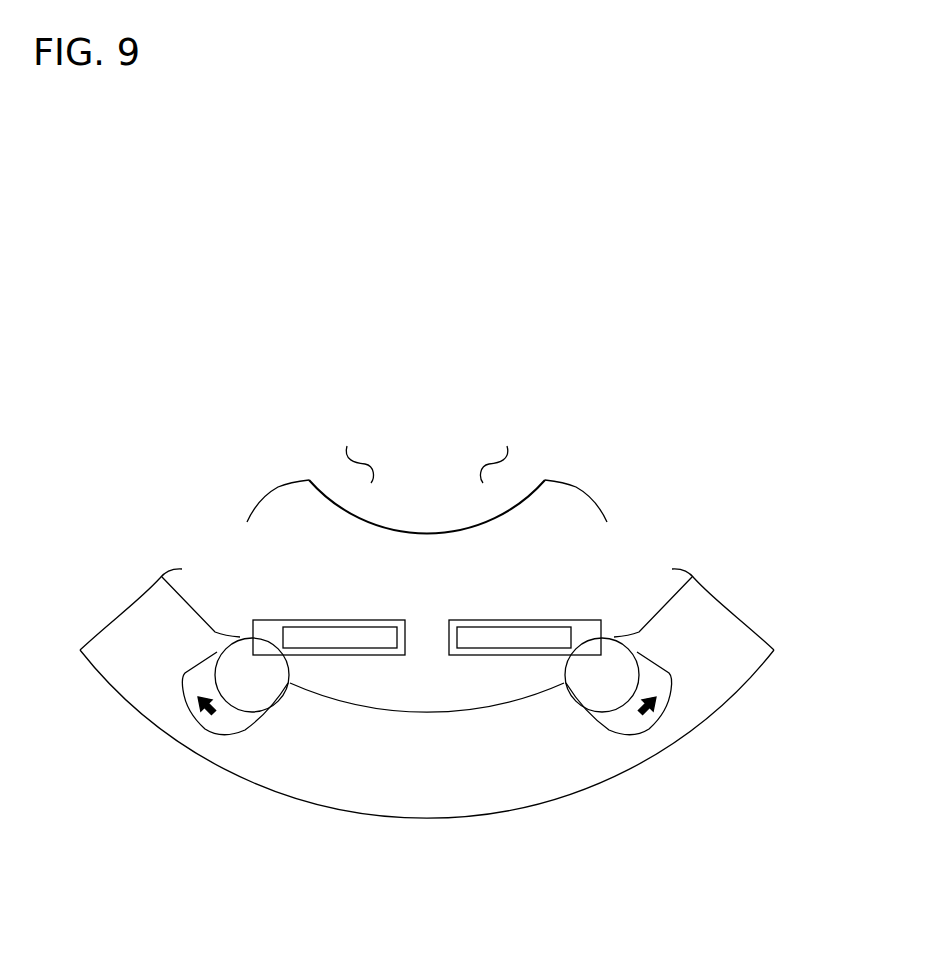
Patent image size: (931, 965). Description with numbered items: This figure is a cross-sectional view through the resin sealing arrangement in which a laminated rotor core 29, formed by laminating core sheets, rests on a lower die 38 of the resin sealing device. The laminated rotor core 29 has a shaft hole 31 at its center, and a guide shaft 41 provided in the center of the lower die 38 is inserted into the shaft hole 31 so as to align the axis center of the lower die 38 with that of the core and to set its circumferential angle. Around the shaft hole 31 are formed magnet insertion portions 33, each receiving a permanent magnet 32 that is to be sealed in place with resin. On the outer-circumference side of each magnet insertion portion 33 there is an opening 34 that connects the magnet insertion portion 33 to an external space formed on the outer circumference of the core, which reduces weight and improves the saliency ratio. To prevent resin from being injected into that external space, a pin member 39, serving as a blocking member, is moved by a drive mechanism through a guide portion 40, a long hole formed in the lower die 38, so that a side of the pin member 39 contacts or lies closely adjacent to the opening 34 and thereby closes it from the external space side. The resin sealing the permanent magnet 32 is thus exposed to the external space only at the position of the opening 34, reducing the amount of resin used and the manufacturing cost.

The laminated rotor core 29 is at (178, 515).
The shaft hole 31 is at (328, 495).
The permanent magnet 32 is at (482, 638).
The magnet insertion portion 33 is at (358, 612).
The opening 34 is at (282, 648).
The lower die 38 is at (502, 793).
The pin member 39 is at (255, 687).
The guide portion 40 is at (250, 735).
The guide shaft 41 is at (515, 480).